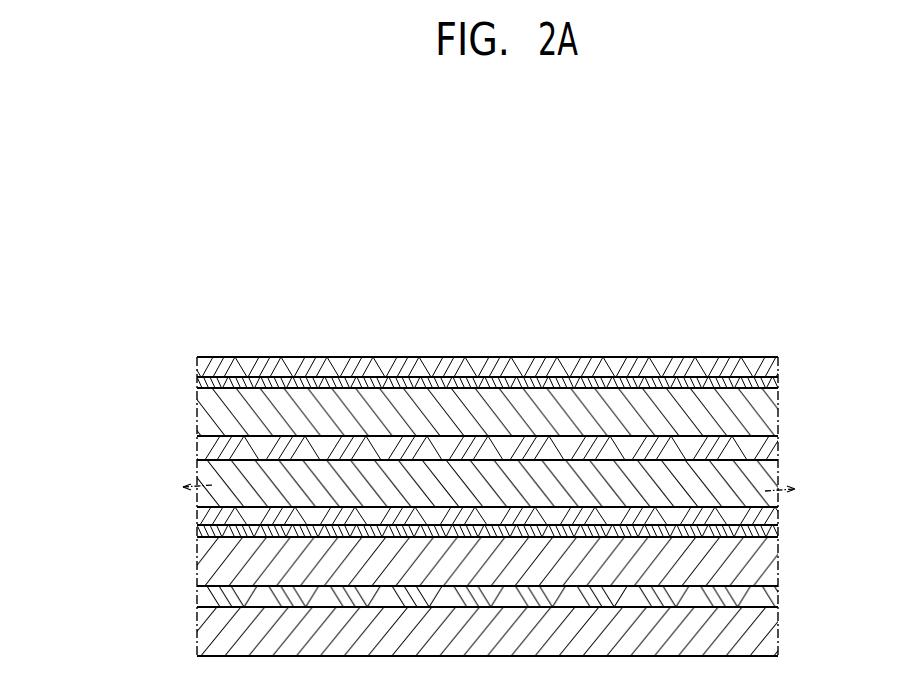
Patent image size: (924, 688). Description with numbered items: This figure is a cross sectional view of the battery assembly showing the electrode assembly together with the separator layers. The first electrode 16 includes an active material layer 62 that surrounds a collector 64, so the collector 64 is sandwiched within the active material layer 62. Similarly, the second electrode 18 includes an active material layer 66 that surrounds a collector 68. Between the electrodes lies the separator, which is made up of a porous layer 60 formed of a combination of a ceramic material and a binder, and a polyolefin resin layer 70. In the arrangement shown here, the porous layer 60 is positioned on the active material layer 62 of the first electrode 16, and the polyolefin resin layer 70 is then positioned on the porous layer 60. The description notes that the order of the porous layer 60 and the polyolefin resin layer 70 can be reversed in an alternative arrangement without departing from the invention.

The first electrode 16 is at (93, 380).
The second electrode 18 is at (93, 547).
The porous layer 60 is at (790, 387).
The active material layer 62 is at (208, 462).
The collector 64 is at (230, 456).
The active material layer 66 is at (213, 625).
The collector 68 is at (262, 605).
The polyolefin resin layer 70 is at (773, 530).